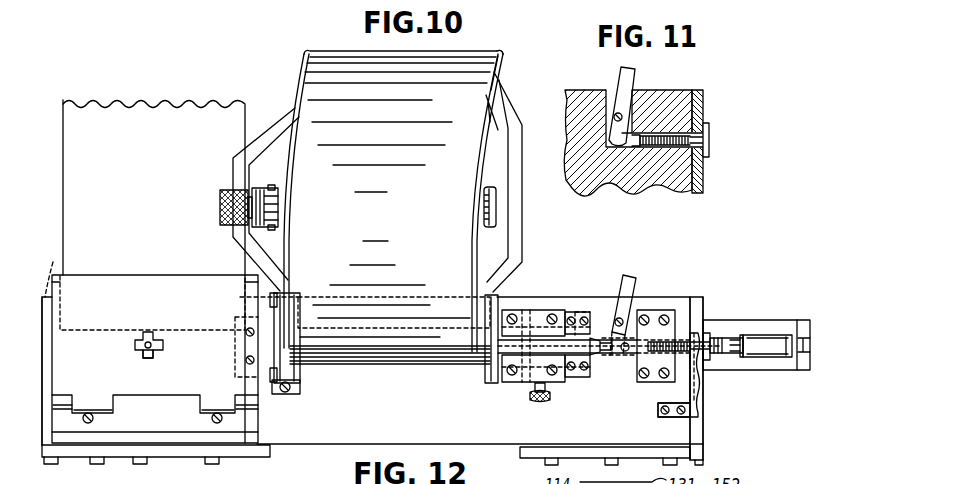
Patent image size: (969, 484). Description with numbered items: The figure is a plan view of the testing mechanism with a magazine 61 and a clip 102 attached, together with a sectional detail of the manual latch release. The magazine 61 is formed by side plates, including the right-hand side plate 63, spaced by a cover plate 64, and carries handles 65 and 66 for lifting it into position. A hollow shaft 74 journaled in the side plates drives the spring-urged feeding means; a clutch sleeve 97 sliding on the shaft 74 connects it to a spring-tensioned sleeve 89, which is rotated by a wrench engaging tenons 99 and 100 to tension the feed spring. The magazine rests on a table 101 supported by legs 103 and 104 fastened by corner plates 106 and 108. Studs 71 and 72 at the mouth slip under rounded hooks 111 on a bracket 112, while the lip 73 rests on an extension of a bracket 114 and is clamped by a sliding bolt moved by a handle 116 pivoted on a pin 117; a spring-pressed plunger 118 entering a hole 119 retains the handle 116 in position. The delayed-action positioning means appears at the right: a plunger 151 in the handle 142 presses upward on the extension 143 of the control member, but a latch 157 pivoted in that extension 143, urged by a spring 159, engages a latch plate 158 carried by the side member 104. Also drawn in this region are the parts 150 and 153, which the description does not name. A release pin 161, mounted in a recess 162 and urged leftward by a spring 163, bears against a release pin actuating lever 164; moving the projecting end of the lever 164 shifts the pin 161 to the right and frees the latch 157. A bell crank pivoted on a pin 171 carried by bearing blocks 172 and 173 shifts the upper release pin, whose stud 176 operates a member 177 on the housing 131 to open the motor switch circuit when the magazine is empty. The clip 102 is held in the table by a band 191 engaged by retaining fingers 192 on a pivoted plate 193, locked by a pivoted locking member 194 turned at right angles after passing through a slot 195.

In FIG. 10, the magazine 61 is at (296, 63).
In FIG. 10, the right-hand side plate 63 is at (501, 68).
In FIG. 10, the cover plate 64 is at (499, 50).
In FIG. 10, the handle 65 is at (277, 97).
In FIG. 10, the handle 66 is at (503, 118).
In FIG. 10, the stud 71 is at (300, 390).
In FIG. 10, the stud 72 is at (310, 312).
In FIG. 10, the lip 73 is at (492, 324).
In FIG. 10, the hollow spindle or shaft 74 is at (497, 200).
In FIG. 10, the sleeve 89 is at (279, 208).
In FIG. 10, the clutch sleeve 97 is at (220, 207).
In FIG. 10, the tenon 99 is at (271, 185).
In FIG. 10, the tenon 100 is at (273, 228).
In FIG. 10, the table 101 is at (320, 444).
In FIG. 11, the table 101 is at (668, 188).
In FIG. 10, the clip 102 is at (182, 86).
In FIG. 10, the side member or leg 103 is at (40, 437).
In FIG. 10, the side member or leg 104 is at (702, 437).
In FIG. 11, the side member or leg 104 is at (697, 193).
In FIG. 10, the corner plate 106 is at (163, 452).
In FIG. 10, the corner plate 108 is at (590, 452).
In FIG. 10, the rounded hook 111 is at (305, 322).
In FIG. 10, the bracket 112 is at (266, 372).
In FIG. 10, the bracket 114 is at (546, 288).
In FIG. 10, the handle 116 is at (593, 338).
In FIG. 10, the pin 117 is at (527, 382).
In FIG. 10, the spring-pressed plunger 118 is at (530, 401).
In FIG. 10, the hole 119 is at (545, 310).
In FIG. 10, the housing 131 is at (657, 362).
In FIG. 10, the handle 142 is at (769, 357).
In FIG. 10, the extension 143 is at (718, 355).
In FIG. 10, the motor 150 is at (780, 337).
In FIG. 10, the plunger 151 is at (742, 337).
In FIG. 10, the bearing block 153 is at (676, 312).
In FIG. 10, the latch 157 is at (716, 338).
In FIG. 10, the latch plate 158 is at (712, 338).
In FIG. 11, the latch plate 158 is at (710, 131).
In FIG. 10, the spring 159 is at (679, 417).
In FIG. 11, the release pin 161 is at (704, 143).
In FIG. 11, the recess 162 is at (673, 146).
In FIG. 11, the spring 163 is at (681, 133).
In FIG. 10, the release pin actuating lever 164 is at (629, 276).
In FIG. 11, the release pin actuating lever 164 is at (634, 78).
In FIG. 10, the pin 171 is at (568, 377).
In FIG. 10, the bearing block 172 is at (588, 366).
In FIG. 10, the bearing block 173 is at (583, 310).
In FIG. 10, the stud 176 is at (624, 351).
In FIG. 10, the member 177 is at (628, 310).
In FIG. 10, the band 191 is at (42, 269).
In FIG. 10, the retaining finger 192 is at (60, 277).
In FIG. 10, the plate 193 is at (137, 385).
In FIG. 10, the pivoted locking member 194 is at (163, 346).
In FIG. 10, the slot 195 is at (152, 358).